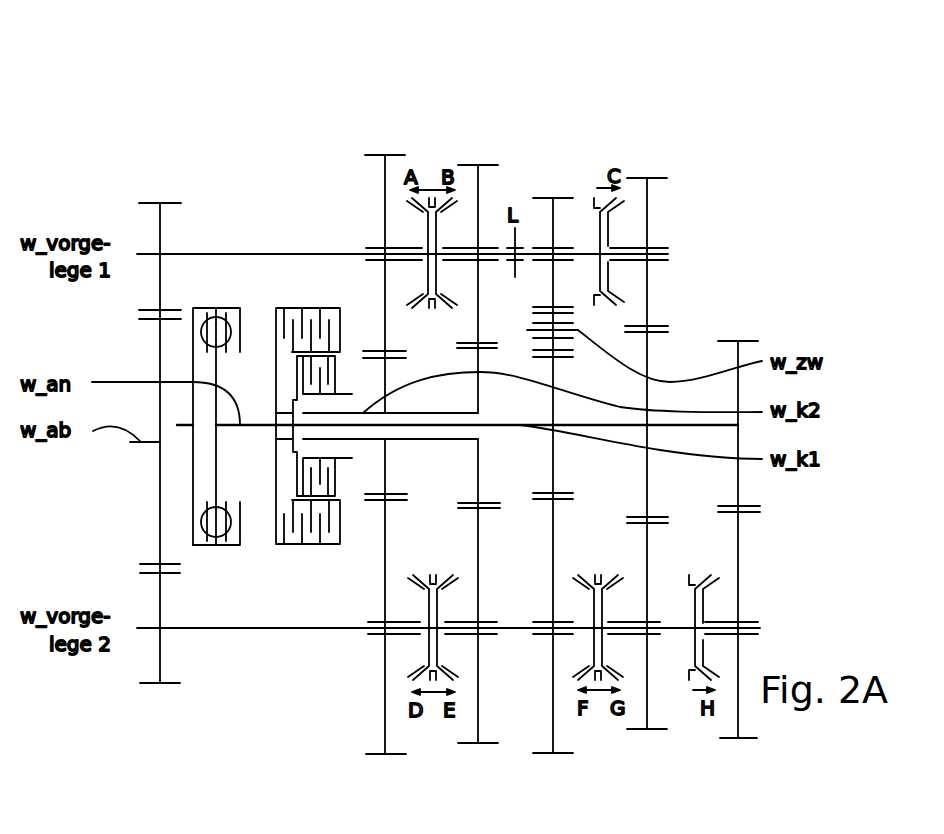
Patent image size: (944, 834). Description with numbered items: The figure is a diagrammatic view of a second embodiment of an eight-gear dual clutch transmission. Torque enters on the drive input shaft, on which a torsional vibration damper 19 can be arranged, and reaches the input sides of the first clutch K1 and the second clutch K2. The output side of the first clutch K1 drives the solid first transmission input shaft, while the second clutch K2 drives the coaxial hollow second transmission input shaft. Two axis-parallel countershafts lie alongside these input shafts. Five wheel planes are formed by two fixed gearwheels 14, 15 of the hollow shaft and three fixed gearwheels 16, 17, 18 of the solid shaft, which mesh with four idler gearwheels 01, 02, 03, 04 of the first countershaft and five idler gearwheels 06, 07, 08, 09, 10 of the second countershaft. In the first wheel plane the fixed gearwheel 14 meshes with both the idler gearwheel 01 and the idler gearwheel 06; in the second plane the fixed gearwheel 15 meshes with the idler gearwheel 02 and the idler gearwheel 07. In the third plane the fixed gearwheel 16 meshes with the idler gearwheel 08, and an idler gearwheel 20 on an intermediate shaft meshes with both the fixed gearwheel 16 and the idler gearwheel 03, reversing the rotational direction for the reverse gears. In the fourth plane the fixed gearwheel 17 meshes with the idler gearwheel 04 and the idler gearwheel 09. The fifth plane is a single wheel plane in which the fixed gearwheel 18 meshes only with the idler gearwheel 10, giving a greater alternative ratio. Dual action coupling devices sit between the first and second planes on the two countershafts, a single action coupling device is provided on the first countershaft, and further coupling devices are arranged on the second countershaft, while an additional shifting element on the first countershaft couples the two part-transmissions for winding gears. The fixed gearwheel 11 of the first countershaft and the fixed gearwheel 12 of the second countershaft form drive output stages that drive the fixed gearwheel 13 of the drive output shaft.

The fixed gearwheel of the first countershaft 11 is at (159, 203).
The fixed gearwheel of the second countershaft 12 is at (157, 688).
The fixed gearwheel of the drive output shaft 13 is at (162, 337).
The fixed gearwheel of the second transmission input shaft 14 is at (360, 350).
The fixed gearwheel of the second transmission input shaft 15 is at (482, 362).
The fixed gearwheel of the first transmission input shaft 16 is at (552, 377).
The fixed gearwheel of the first transmission input shaft 17 is at (650, 345).
The fixed gearwheel of the first transmission input shaft 18 is at (758, 344).
The torsional vibration damper 19 is at (230, 547).
The idler gearwheel of the intermediate shaft 20 is at (560, 197).
The idler gearwheel of the first countershaft 01 is at (378, 155).
The idler gearwheel of the first countershaft 02 is at (470, 165).
The idler gearwheel of the first countershaft 03 is at (594, 312).
The idler gearwheel of the first countershaft 04 is at (653, 178).
The idler gearwheel of the second countershaft 06 is at (380, 754).
The idler gearwheel of the second countershaft 07 is at (470, 745).
The idler gearwheel of the second countershaft 08 is at (566, 755).
The idler gearwheel of the second countershaft 09 is at (653, 733).
The idler gearwheel of the second countershaft 10 is at (752, 740).
The first clutch K1 is at (268, 367).
The second clutch K2 is at (245, 320).